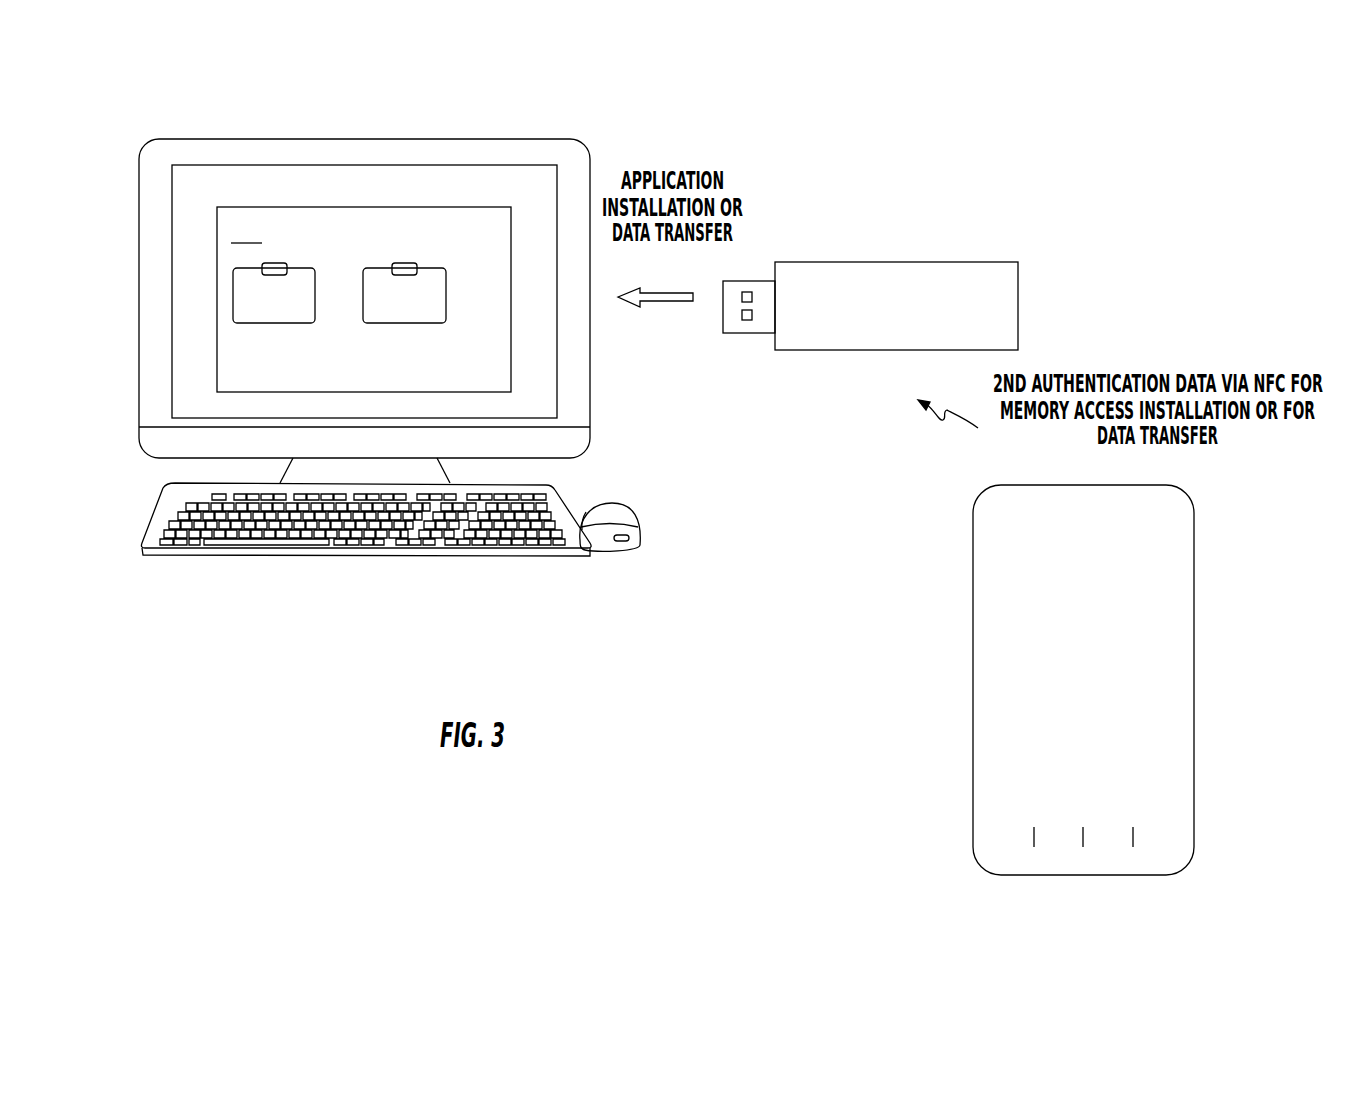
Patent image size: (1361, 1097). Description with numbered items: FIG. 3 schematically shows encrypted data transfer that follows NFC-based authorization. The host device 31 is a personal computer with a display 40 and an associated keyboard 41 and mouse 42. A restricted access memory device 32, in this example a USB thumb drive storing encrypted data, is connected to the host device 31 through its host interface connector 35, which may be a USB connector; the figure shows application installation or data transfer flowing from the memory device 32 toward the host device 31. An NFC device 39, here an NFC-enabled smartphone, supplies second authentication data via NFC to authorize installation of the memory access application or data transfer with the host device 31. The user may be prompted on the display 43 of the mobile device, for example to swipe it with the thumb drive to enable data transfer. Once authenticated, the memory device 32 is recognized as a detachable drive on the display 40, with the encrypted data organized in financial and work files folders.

The host device 31 is at (166, 92).
The display 40 is at (409, 185).
The keyboard 41 is at (152, 555).
The mouse 42 is at (640, 550).
The memory device 32 is at (967, 262).
The host interface connector 35 is at (733, 280).
The NFC device 39 is at (960, 560).
The display 43 is at (1162, 638).